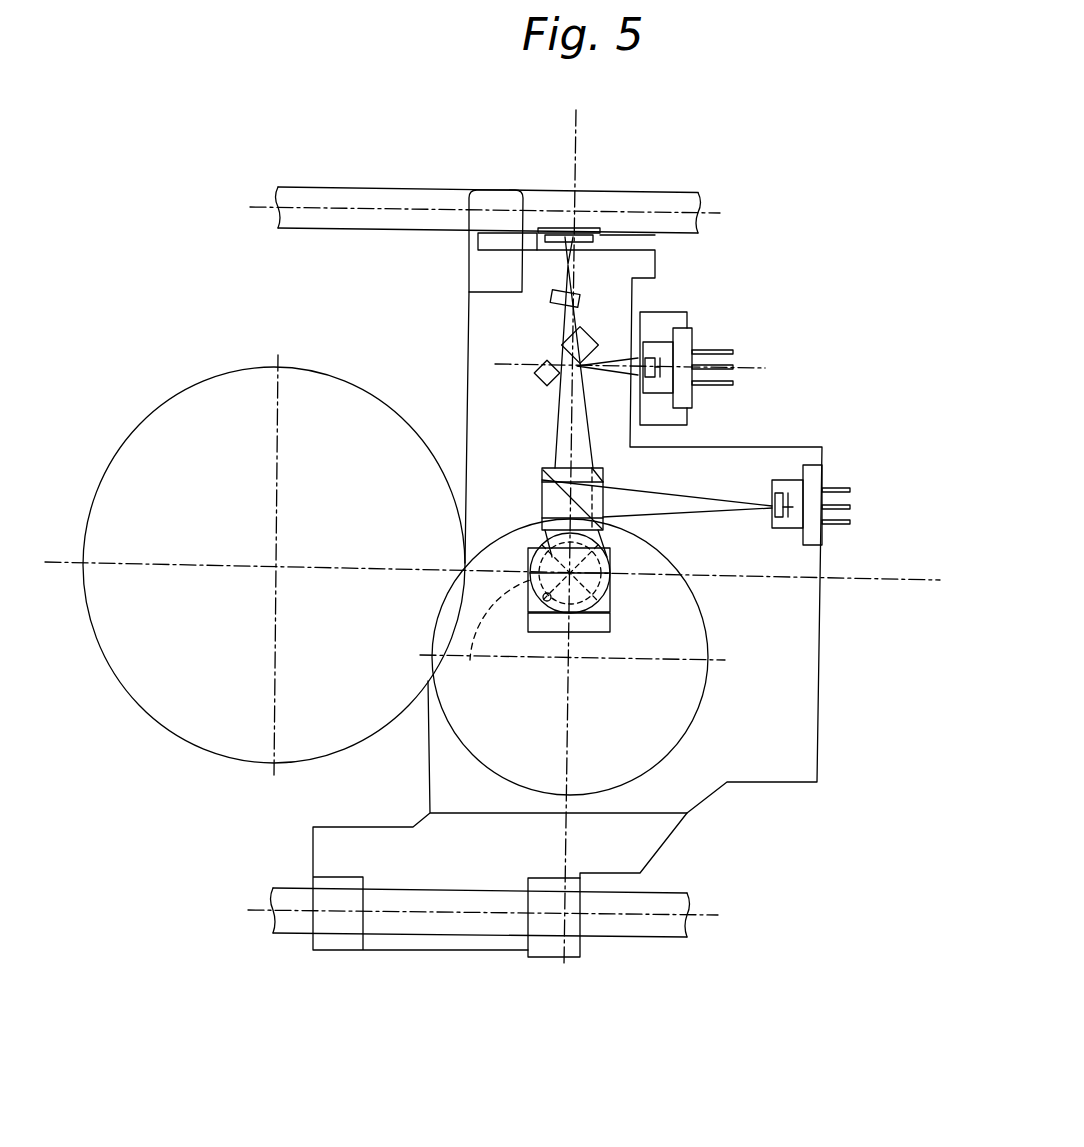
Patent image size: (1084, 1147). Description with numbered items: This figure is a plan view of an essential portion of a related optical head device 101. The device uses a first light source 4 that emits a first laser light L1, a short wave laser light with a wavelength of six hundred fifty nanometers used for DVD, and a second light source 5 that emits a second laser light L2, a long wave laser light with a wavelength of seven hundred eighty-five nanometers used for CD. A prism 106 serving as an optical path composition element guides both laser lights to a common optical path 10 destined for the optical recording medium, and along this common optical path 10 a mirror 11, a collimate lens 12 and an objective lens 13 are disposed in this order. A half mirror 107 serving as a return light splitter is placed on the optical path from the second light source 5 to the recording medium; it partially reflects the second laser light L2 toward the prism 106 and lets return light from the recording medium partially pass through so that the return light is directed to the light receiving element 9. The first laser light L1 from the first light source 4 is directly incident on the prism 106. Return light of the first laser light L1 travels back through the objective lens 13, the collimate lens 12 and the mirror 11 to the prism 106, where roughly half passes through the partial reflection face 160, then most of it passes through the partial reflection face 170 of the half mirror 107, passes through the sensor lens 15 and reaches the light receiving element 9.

The light receiving element 9 is at (582, 226).
The sensor lens 15 is at (551, 295).
The half mirror 107 is at (552, 362).
The partial reflection face of the half mirror 170 is at (533, 382).
The second laser light L2 is at (617, 373).
The second light source 5 is at (688, 340).
The prism 106 is at (542, 494).
The partial reflection face of the prism 160 is at (542, 478).
The first laser light L1 is at (727, 513).
The first light source 4 is at (812, 483).
The common optical path 10 is at (531, 636).
The mirror 11 is at (560, 590).
The collimate lens 12 is at (493, 638).
The objective lens 13 is at (533, 633).
The optical head device 101 is at (808, 257).